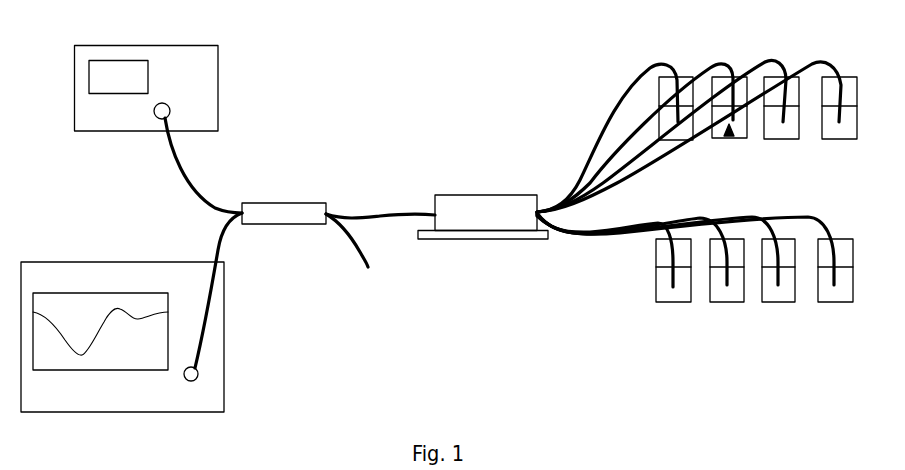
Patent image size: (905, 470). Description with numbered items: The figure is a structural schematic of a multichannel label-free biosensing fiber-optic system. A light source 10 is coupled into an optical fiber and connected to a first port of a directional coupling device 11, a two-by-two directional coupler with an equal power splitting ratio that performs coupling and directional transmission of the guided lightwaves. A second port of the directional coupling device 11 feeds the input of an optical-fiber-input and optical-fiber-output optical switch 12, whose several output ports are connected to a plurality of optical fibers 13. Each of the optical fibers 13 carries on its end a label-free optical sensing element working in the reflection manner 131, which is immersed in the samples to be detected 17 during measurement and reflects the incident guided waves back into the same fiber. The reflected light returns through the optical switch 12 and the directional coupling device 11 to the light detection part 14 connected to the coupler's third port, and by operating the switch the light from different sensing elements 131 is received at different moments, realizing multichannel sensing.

The light source 10 is at (218, 102).
The directional coupling device 11 is at (297, 200).
The optical-fiber-input and optical-fiber-output optical switch 12 is at (473, 200).
The optical fibers 13 is at (727, 60).
The label-free optical sensing element working in the reflection manner 131 is at (731, 137).
The samples to be detected 17 is at (787, 127).
The light detection part 14 is at (224, 348).